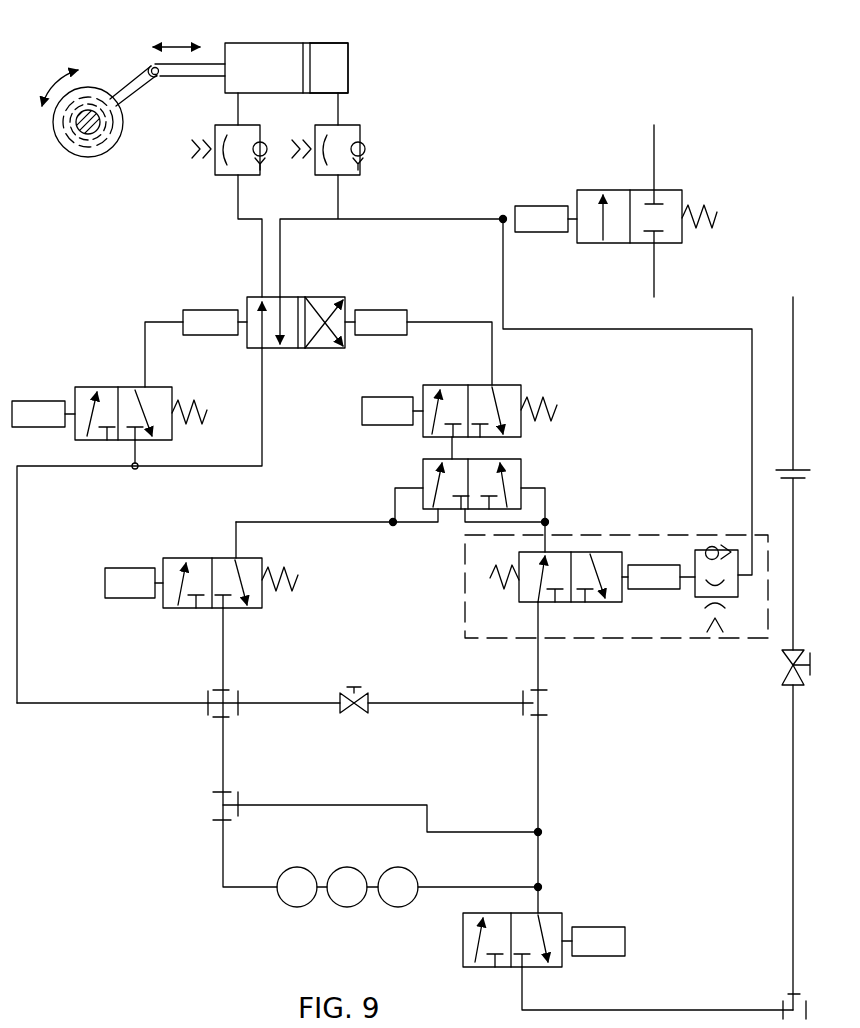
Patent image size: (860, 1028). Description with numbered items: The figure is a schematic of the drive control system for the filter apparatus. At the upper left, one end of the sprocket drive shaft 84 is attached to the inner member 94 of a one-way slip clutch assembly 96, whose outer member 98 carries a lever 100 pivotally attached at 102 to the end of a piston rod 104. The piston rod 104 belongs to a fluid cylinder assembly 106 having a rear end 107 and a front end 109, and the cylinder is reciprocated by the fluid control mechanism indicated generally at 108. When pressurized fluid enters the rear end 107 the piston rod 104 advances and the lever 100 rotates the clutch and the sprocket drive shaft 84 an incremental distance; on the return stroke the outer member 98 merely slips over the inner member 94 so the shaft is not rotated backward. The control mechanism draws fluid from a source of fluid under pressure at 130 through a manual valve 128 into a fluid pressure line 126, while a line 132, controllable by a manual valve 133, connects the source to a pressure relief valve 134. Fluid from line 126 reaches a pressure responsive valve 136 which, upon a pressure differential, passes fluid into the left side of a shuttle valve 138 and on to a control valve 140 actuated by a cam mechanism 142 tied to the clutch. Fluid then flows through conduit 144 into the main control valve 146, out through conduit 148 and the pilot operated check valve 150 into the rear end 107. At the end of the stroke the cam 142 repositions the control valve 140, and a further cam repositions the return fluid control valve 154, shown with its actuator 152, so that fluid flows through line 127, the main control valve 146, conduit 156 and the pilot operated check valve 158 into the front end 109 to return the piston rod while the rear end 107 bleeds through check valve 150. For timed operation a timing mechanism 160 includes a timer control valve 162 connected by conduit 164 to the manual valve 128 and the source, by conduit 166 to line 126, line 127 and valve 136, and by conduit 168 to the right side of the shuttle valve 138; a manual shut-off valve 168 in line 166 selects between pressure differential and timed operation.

The sprocket drive shaft 84 is at (76, 126).
The inner member 94 is at (88, 150).
The outer member 98 is at (112, 142).
The slip clutch assembly 96 is at (88, 80).
The lever 100 is at (128, 86).
The pivot attachment 102 is at (158, 80).
The piston rod 104 is at (205, 63).
The front end 109 is at (268, 48).
The fluid cylinder assembly 106 is at (336, 44).
The rear end 107 is at (340, 72).
The pilot pressure operated check valve 158 is at (262, 140).
The pilot operated check valve 150 is at (365, 140).
The conduit 156 is at (238, 212).
The conduit 148 is at (343, 195).
The fluid control mechanism 108 is at (486, 172).
The pressure relief valve 134 is at (684, 196).
The conduit 144 is at (461, 322).
The main control valve 146 is at (250, 302).
The return fluid control valve 154 is at (132, 382).
The pilot actuator 152 is at (57, 400).
The line 127 is at (17, 543).
The cam mechanism 142 is at (361, 421).
The control valve 140 is at (423, 435).
The shuttle valve 138 is at (420, 479).
The timing mechanism 160 is at (655, 534).
The timer control valve 162 is at (585, 550).
The manual shut-off valve 168 is at (548, 502).
The pressure responsive valve 136 is at (222, 557).
The conduit 166 is at (448, 688).
The fluid pressure line 126 is at (222, 858).
The conduit 164 is at (542, 736).
The manual valve 128 is at (556, 912).
The source of fluid under pressure 130 is at (786, 1006).
The pressure bleed-off line 132 is at (793, 830).
The manual valve 133 is at (790, 676).